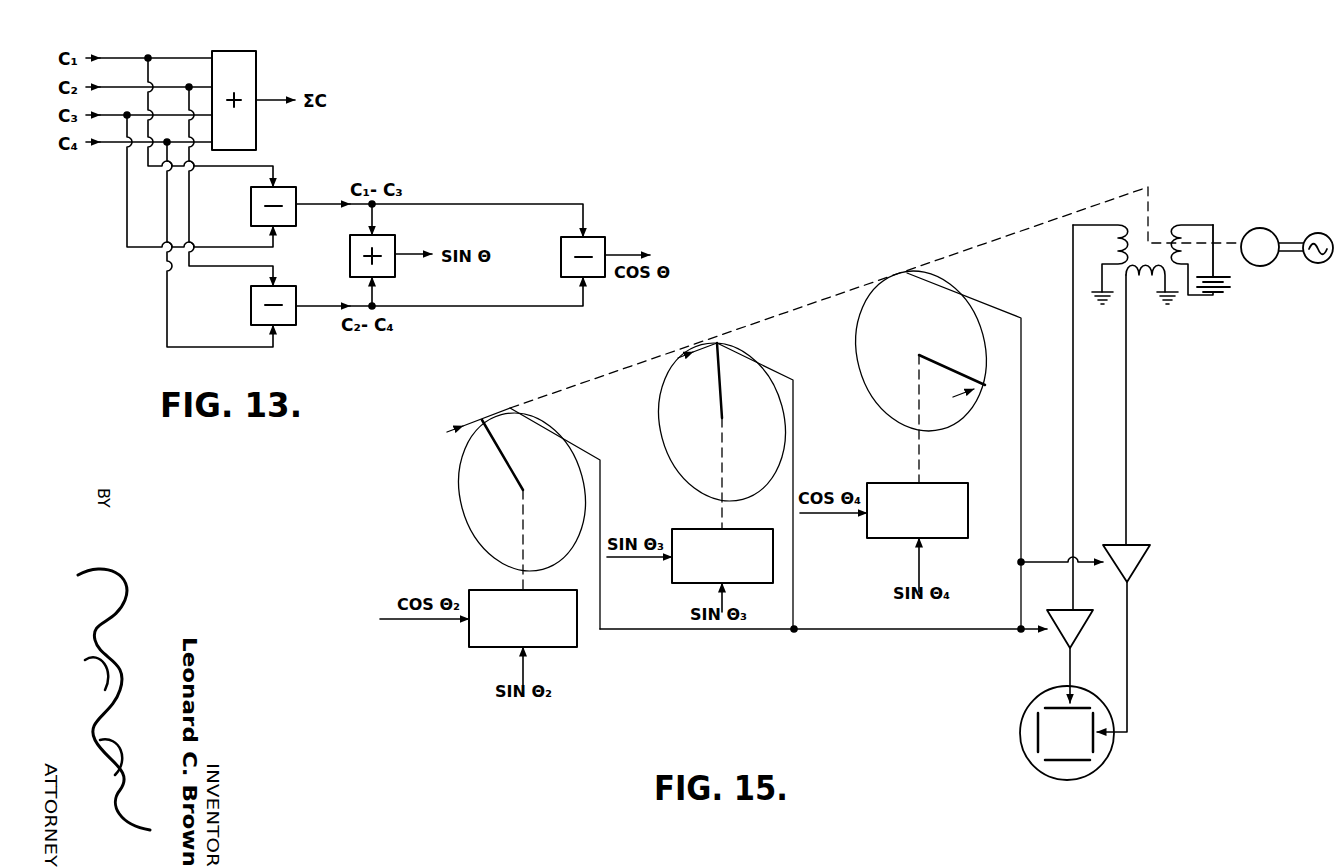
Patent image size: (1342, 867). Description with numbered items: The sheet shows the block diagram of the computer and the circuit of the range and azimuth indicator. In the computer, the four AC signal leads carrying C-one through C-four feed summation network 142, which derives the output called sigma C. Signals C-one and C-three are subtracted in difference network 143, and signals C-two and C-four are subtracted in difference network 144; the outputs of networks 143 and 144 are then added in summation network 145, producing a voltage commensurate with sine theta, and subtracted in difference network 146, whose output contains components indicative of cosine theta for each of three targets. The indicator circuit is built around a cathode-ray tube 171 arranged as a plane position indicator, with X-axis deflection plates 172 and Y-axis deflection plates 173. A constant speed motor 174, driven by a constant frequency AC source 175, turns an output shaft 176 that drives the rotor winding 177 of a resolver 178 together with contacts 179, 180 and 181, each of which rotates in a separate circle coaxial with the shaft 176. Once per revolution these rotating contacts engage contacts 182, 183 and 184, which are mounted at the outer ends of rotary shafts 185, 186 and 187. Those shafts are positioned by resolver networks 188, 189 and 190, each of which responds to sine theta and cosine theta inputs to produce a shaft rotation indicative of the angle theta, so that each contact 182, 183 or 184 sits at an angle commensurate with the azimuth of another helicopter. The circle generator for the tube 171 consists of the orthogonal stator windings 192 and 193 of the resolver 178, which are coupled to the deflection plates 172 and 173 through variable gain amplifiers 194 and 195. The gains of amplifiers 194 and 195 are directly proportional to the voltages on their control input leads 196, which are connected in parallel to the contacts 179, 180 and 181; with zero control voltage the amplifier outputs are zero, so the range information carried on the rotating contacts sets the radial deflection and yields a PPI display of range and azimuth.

In FIG. 13, the summation network 142 is at (240, 51).
In FIG. 13, the difference network 143 is at (288, 231).
In FIG. 13, the difference network 144 is at (288, 330).
In FIG. 13, the summation network 145 is at (393, 271).
In FIG. 13, the difference network 146 is at (597, 243).
In FIG. 15, the cathode-ray tube 171 is at (1059, 733).
In FIG. 15, the X-axis deflection plates 172 is at (1097, 747).
In FIG. 15, the Y-axis deflection plates 173 is at (1050, 705).
In FIG. 15, the constant speed motor 174 is at (1265, 229).
In FIG. 15, the constant frequency AC source 175 is at (1321, 233).
In FIG. 15, the output shaft 176 is at (1233, 243).
In FIG. 15, the rotor winding 177 is at (1169, 229).
In FIG. 15, the resolver 178 is at (1184, 304).
In FIG. 15, the contact 179 is at (517, 502).
In FIG. 15, the contact 180 is at (721, 465).
In FIG. 15, the contact 181 is at (929, 427).
In FIG. 15, the contact 182 is at (482, 428).
In FIG. 15, the contact 183 is at (722, 343).
In FIG. 15, the contact 184 is at (986, 387).
In FIG. 15, the rotary shaft 185 is at (504, 459).
In FIG. 15, the rotary shaft 186 is at (720, 404).
In FIG. 15, the rotary shaft 187 is at (947, 366).
In FIG. 15, the resolver network 188 is at (486, 653).
In FIG. 15, the resolver network 189 is at (781, 549).
In FIG. 15, the resolver network 190 is at (949, 440).
In FIG. 15, the stator winding 192 is at (1147, 280).
In FIG. 15, the stator winding 193 is at (1118, 223).
In FIG. 15, the variable gain amplifier 194 is at (1142, 561).
In FIG. 15, the variable gain amplifier 195 is at (1085, 633).
In FIG. 15, the control input lead 196 is at (1037, 633).